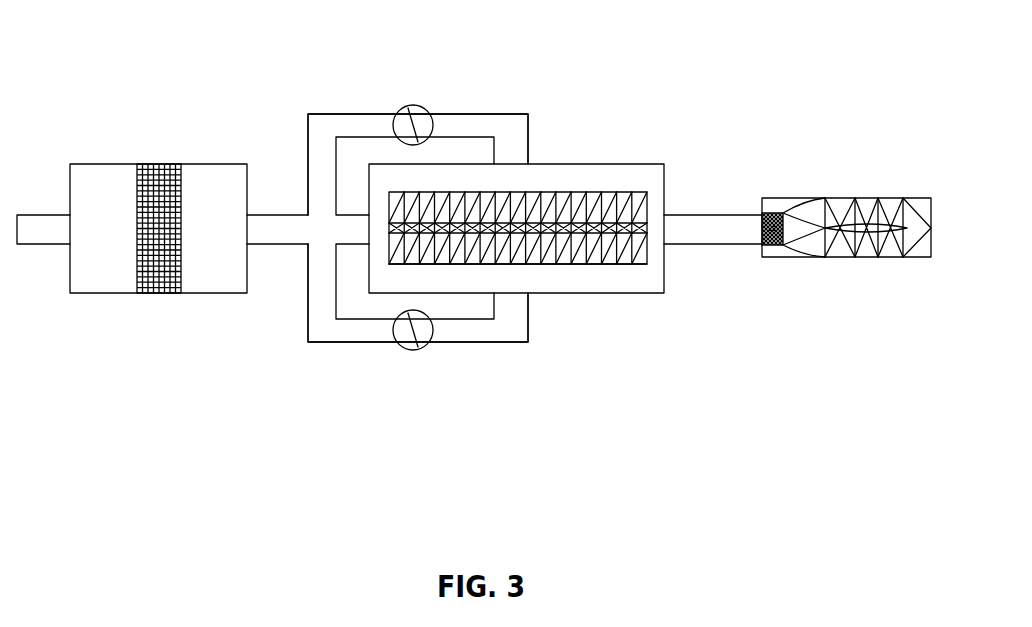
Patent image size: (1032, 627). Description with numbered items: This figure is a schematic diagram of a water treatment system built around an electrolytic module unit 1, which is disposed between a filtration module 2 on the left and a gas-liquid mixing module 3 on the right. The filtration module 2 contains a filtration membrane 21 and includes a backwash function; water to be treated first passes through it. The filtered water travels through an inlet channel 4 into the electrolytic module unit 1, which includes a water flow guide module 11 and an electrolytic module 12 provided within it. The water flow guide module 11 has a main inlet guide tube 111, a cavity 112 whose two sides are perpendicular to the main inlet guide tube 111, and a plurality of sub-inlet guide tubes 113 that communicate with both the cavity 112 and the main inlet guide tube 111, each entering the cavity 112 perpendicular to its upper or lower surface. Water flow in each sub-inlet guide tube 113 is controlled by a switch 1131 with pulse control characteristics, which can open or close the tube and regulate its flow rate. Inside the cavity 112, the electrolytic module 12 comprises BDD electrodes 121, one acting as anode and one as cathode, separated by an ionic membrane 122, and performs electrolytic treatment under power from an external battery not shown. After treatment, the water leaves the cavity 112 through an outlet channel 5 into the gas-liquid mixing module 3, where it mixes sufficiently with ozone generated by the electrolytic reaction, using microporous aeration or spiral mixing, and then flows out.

The electrolytic module unit 1 is at (372, 82).
The filtration module 2 is at (168, 147).
The filtration membrane 21 is at (157, 293).
The inlet channel 4 is at (277, 233).
The water flow guide module 11 is at (492, 358).
The main inlet guide tube 111 is at (351, 228).
The cavity 112 is at (543, 175).
The sub-inlet guide tubes 113 is at (512, 313).
The switch 1131 is at (415, 350).
The electrolytic module 12 is at (627, 192).
The BDD electrode 121 is at (638, 248).
The ionic membrane 122 is at (587, 263).
The outlet channel 5 is at (716, 227).
The gas-liquid mixing module 3 is at (838, 185).